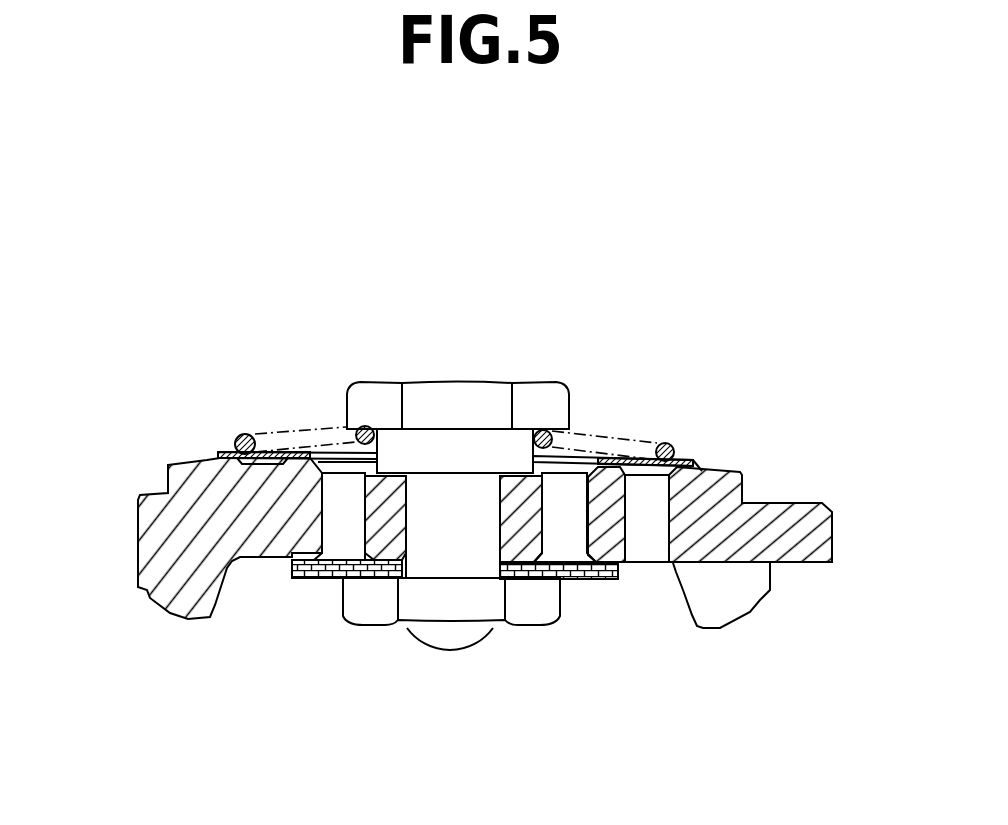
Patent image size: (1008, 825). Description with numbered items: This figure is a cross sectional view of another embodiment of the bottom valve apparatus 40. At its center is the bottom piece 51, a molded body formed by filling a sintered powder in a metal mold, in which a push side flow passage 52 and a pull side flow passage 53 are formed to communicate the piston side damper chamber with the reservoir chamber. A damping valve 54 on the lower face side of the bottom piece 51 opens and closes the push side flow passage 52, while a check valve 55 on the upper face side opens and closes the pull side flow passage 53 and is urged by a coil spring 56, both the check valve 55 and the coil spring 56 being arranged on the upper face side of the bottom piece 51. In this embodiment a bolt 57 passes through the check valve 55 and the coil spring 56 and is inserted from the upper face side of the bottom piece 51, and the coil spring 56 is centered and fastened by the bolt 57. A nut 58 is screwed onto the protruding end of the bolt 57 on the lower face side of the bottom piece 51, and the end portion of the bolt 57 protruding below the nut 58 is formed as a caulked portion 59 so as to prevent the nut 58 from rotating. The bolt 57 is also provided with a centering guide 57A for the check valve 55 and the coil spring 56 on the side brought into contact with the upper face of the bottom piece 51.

The bottom valve apparatus 40 is at (308, 330).
The bottom piece 51 is at (812, 528).
The push side flow passage 52 is at (340, 514).
The pull side flow passage 53 is at (652, 517).
The damping valve 54 is at (603, 583).
The check valve 55 is at (698, 463).
The coil spring 56 is at (666, 444).
The bolt 57 is at (437, 402).
The centering guide 57A is at (472, 453).
The nut 58 is at (372, 608).
The caulked portion 59 is at (451, 650).